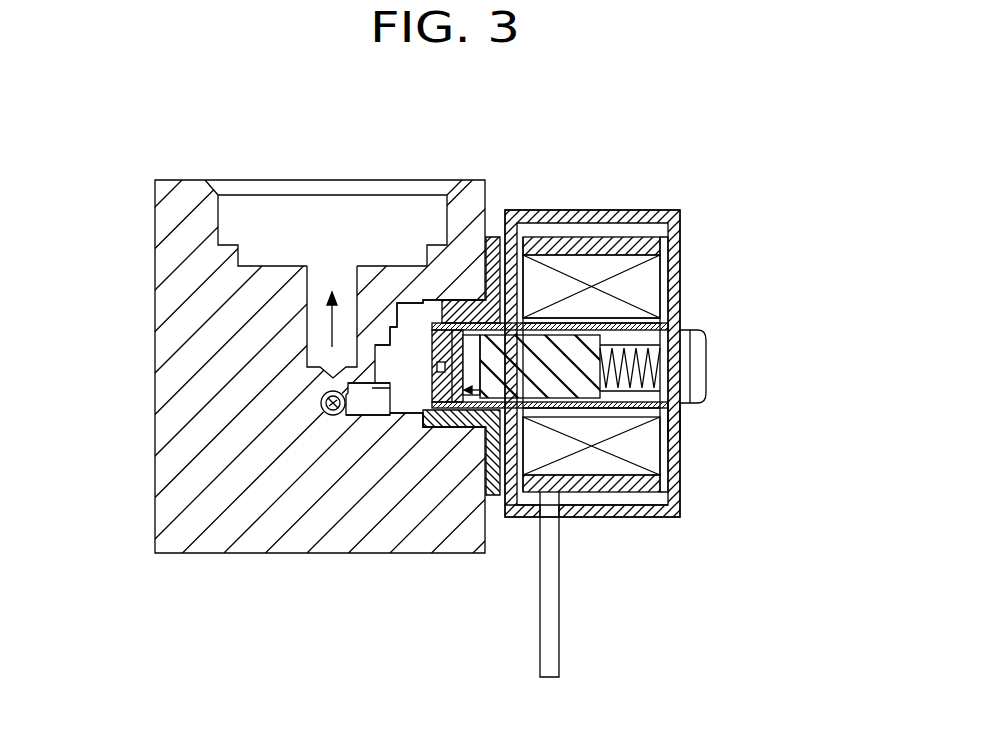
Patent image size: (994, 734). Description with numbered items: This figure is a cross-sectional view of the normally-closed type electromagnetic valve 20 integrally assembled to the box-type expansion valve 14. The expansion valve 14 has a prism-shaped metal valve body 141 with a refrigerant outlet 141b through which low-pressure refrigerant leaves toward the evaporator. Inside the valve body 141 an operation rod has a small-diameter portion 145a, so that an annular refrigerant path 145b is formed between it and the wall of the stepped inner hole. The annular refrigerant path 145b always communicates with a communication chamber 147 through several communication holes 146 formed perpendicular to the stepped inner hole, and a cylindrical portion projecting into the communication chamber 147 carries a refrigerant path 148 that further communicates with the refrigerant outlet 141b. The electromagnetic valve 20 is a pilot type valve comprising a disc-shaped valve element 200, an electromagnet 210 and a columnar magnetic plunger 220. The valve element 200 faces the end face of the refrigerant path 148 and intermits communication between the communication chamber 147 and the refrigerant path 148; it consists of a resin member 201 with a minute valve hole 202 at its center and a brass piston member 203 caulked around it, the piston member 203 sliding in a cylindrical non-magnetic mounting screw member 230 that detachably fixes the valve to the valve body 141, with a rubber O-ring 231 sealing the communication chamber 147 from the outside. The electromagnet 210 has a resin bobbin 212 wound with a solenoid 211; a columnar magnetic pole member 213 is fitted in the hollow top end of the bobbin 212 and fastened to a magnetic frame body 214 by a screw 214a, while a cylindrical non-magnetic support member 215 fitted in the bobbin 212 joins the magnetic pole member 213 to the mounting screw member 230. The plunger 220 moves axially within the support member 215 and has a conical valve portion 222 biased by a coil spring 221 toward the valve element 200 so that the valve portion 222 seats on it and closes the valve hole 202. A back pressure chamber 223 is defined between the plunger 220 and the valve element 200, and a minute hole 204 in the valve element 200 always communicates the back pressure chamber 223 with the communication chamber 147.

The box-type expansion valve 14 is at (138, 310).
The valve body 141 is at (185, 398).
The refrigerant outlet 141b is at (280, 210).
The small-diameter portion 145a is at (343, 418).
The annular refrigerant path 145b is at (321, 404).
The communication holes 146 is at (360, 418).
The communication chamber 147 is at (400, 418).
The refrigerant path 148 is at (380, 367).
The normally-closed type electromagnetic valve 20 is at (687, 225).
The valve element 200 is at (680, 480).
The resin member 201 is at (680, 510).
The valve hole 202 is at (458, 435).
The piston member 203 is at (490, 497).
The minute hole 204 is at (682, 352).
The electromagnet 210 is at (665, 203).
The solenoid 211 is at (640, 255).
The resin bobbin 212 is at (645, 268).
The magnetic pole member 213 is at (683, 330).
The magnetic frame body 214 is at (677, 425).
The screw 214a is at (710, 397).
The support member 215 is at (648, 290).
The plunger 220 is at (645, 212).
The coil spring 221 is at (650, 305).
The valve portion 222 is at (680, 453).
The back pressure chamber 223 is at (690, 368).
The mounting screw member 230 is at (577, 323).
The O-ring 231 is at (493, 240).